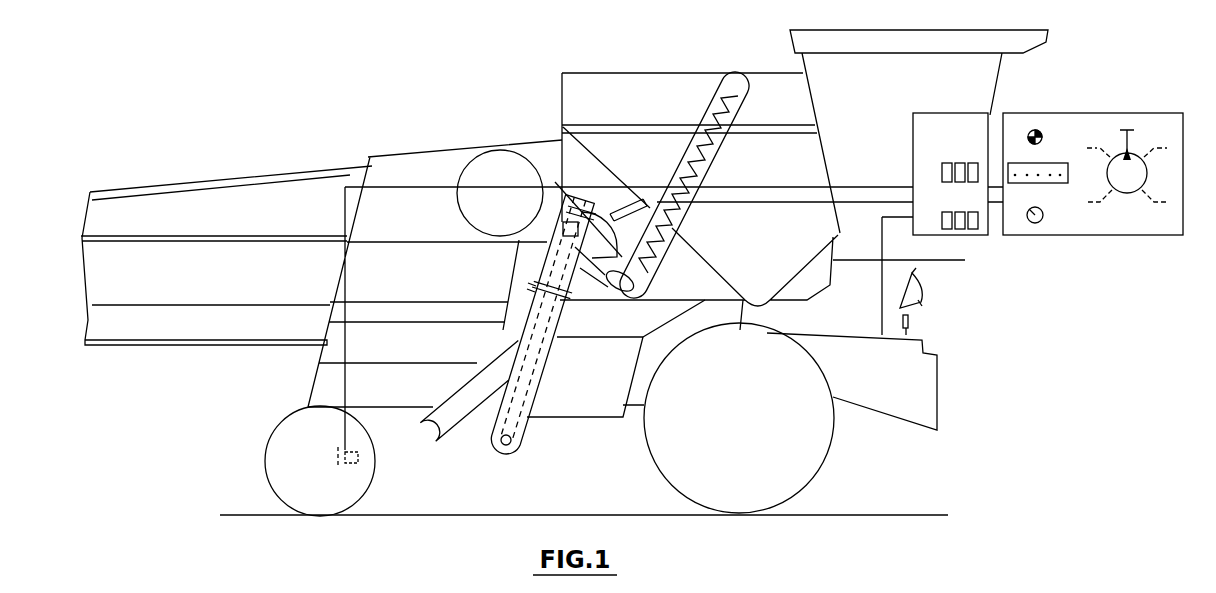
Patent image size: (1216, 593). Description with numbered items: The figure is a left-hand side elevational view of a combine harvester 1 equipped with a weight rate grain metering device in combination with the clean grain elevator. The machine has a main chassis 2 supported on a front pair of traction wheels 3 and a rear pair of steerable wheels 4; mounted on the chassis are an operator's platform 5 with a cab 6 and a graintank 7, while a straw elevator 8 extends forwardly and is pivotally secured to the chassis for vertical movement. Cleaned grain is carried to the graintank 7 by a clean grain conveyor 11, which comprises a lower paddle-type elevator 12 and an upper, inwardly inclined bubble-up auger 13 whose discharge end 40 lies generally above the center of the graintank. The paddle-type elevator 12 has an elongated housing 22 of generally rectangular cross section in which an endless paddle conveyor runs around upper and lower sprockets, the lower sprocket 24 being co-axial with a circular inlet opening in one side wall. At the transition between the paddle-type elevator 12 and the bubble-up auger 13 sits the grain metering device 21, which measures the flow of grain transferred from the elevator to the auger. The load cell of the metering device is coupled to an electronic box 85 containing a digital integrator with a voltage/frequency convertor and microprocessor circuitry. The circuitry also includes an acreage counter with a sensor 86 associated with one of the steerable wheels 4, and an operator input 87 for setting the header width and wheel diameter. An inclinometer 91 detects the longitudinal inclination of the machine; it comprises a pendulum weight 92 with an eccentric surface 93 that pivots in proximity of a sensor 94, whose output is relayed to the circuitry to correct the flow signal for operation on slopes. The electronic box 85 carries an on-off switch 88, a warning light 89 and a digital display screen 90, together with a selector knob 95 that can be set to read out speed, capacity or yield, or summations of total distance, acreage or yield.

The combine harvester 1 is at (463, 132).
The main chassis 2 is at (632, 408).
The front traction wheels 3 is at (825, 468).
The rear steerable wheels 4 is at (370, 500).
The operator's platform 5 is at (922, 282).
The cab 6 is at (1002, 88).
The graintank 7 is at (642, 73).
The straw elevator 8 is at (887, 415).
The clean grain conveyor 11 is at (525, 270).
The paddle-type elevator 12 is at (552, 346).
The bubble-up auger 13 is at (652, 255).
The grain metering device 21 is at (622, 192).
The elevator housing 22 is at (538, 402).
The lower sprocket 24 is at (509, 452).
The discharge end 40 is at (742, 90).
The electronic box 85 is at (1110, 93).
The acreage counter sensor 86 is at (360, 458).
The operator input 87 is at (940, 113).
The on-off switch 88 is at (1042, 220).
The warning light 89 is at (1040, 130).
The digital display screen 90 is at (1068, 183).
The inclinometer 91 is at (952, 306).
The pendulum weight 92 is at (914, 270).
The eccentric surface 93 is at (920, 302).
The inclinometer sensor 94 is at (910, 321).
The selector knob 95 is at (1140, 157).